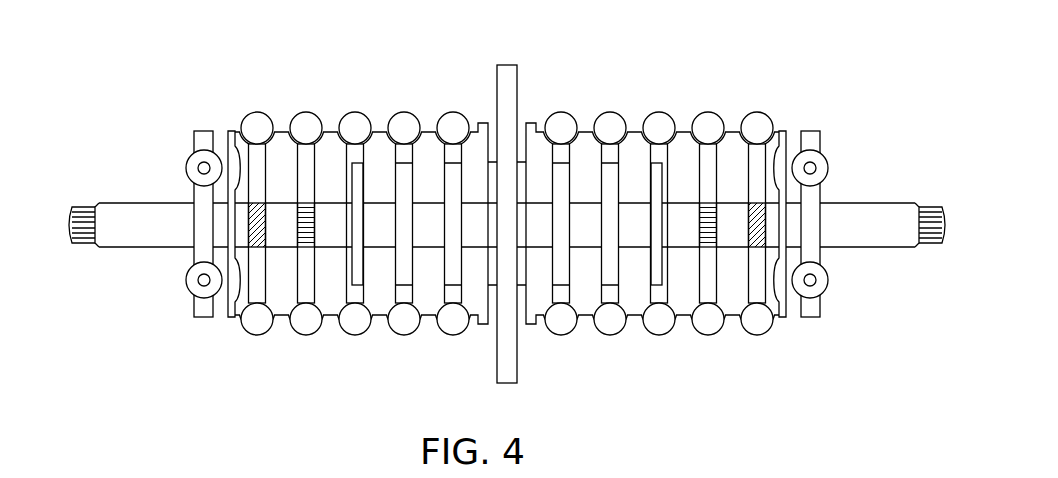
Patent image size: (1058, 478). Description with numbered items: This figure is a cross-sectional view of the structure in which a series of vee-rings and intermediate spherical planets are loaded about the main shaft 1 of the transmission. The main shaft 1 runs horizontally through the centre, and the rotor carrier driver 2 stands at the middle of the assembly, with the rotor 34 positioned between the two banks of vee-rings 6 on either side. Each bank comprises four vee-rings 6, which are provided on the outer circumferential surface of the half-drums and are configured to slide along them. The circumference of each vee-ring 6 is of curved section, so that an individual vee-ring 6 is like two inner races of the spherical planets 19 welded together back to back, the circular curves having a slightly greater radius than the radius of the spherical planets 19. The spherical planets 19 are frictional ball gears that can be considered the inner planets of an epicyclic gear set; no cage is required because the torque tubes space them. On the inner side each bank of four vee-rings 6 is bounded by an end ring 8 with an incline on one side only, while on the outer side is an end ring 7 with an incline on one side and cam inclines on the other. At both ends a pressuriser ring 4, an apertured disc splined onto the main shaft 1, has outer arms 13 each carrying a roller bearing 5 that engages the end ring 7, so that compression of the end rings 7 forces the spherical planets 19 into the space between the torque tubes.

The main shaft 1 is at (880, 213).
The rotor carrier driver 2 is at (505, 85).
The pressuriser ring 4 is at (205, 315).
The roller bearing 5 is at (196, 163).
The vee-ring 6 is at (330, 148).
The end ring 7 is at (230, 148).
The end ring 8 is at (473, 150).
The outer arm 13 is at (200, 162).
The spherical planet 19 is at (709, 123).
The rotor 34 is at (512, 268).